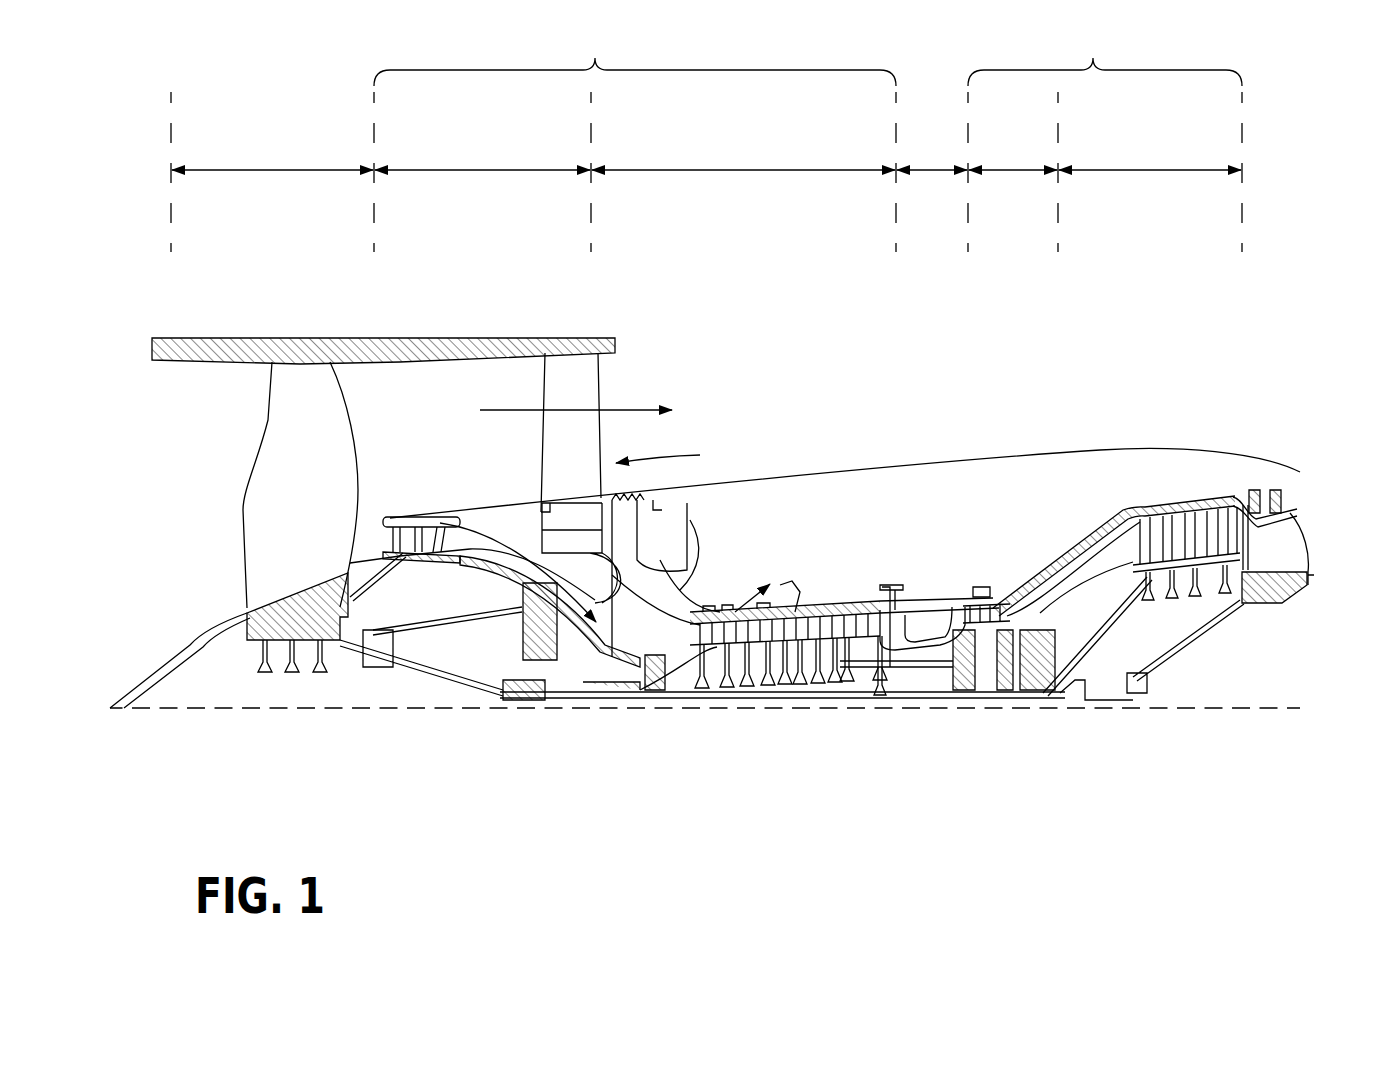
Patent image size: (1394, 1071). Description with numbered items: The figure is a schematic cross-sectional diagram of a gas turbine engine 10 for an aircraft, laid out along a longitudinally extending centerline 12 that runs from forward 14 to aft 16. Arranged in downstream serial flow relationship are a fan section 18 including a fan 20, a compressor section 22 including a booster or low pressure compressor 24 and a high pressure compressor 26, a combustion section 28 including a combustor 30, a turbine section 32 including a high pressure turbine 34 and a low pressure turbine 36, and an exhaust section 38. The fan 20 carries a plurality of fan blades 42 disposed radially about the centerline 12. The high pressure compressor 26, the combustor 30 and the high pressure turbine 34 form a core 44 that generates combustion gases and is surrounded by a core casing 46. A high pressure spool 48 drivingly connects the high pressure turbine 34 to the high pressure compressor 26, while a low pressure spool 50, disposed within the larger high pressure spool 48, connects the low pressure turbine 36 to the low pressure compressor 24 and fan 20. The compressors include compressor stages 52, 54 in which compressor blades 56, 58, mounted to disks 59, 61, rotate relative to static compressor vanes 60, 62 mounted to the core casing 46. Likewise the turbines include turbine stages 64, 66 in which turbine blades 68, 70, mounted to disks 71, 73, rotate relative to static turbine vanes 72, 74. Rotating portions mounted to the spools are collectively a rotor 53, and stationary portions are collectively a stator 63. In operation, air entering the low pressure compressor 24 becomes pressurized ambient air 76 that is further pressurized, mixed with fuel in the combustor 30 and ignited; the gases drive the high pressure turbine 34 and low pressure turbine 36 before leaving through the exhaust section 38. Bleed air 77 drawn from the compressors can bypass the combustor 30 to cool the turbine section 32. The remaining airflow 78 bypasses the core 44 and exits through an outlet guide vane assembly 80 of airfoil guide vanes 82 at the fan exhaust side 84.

The gas turbine engine 10 is at (921, 330).
The centerline 12 is at (271, 710).
The forward 14 is at (118, 474).
The aft 16 is at (1331, 559).
The fan section 18 is at (272, 158).
The fan 20 is at (208, 551).
The compressor section 22 is at (635, 57).
The low pressure compressor 24 is at (482, 158).
The high pressure compressor 26 is at (743, 158).
The combustion section 28 is at (932, 150).
The combustor 30 is at (932, 618).
The turbine section 32 is at (1105, 57).
The HP turbine 34 is at (1013, 158).
The LP turbine 36 is at (1150, 158).
The exhaust section 38 is at (1316, 512).
The fan blades 42 is at (330, 415).
The core 44 is at (871, 508).
The core casing 46 is at (1110, 512).
The HP spool 48 is at (909, 668).
The LP spool 50 is at (523, 702).
The compressor stage 52 is at (363, 458).
The rotor 53 is at (470, 568).
The compressor stage 54 is at (727, 505).
The compressor blades 56 is at (408, 518).
The compressor blades 58 is at (691, 591).
The disk 59 is at (407, 564).
The static compressor vanes 60 is at (391, 518).
The disk 61 is at (664, 692).
The stator 63 is at (1172, 488).
The static compressor vanes 62 is at (691, 578).
The turbine stage 64 is at (963, 511).
The turbine stage 66 is at (1223, 390).
The turbine blades 68 is at (984, 618).
The turbine blades 70 is at (1227, 502).
The disk 71 is at (987, 688).
The static turbine vanes 72 is at (957, 612).
The disk 73 is at (1146, 690).
The static turbine vanes 74 is at (1204, 520).
The pressurized ambient air 76 is at (600, 562).
The bleed air 77 is at (775, 582).
The airflow 78 is at (480, 410).
The outlet guide vane assembly 80 is at (674, 451).
The airfoil guide vanes 82 is at (553, 447).
The fan exhaust side 84 is at (646, 366).